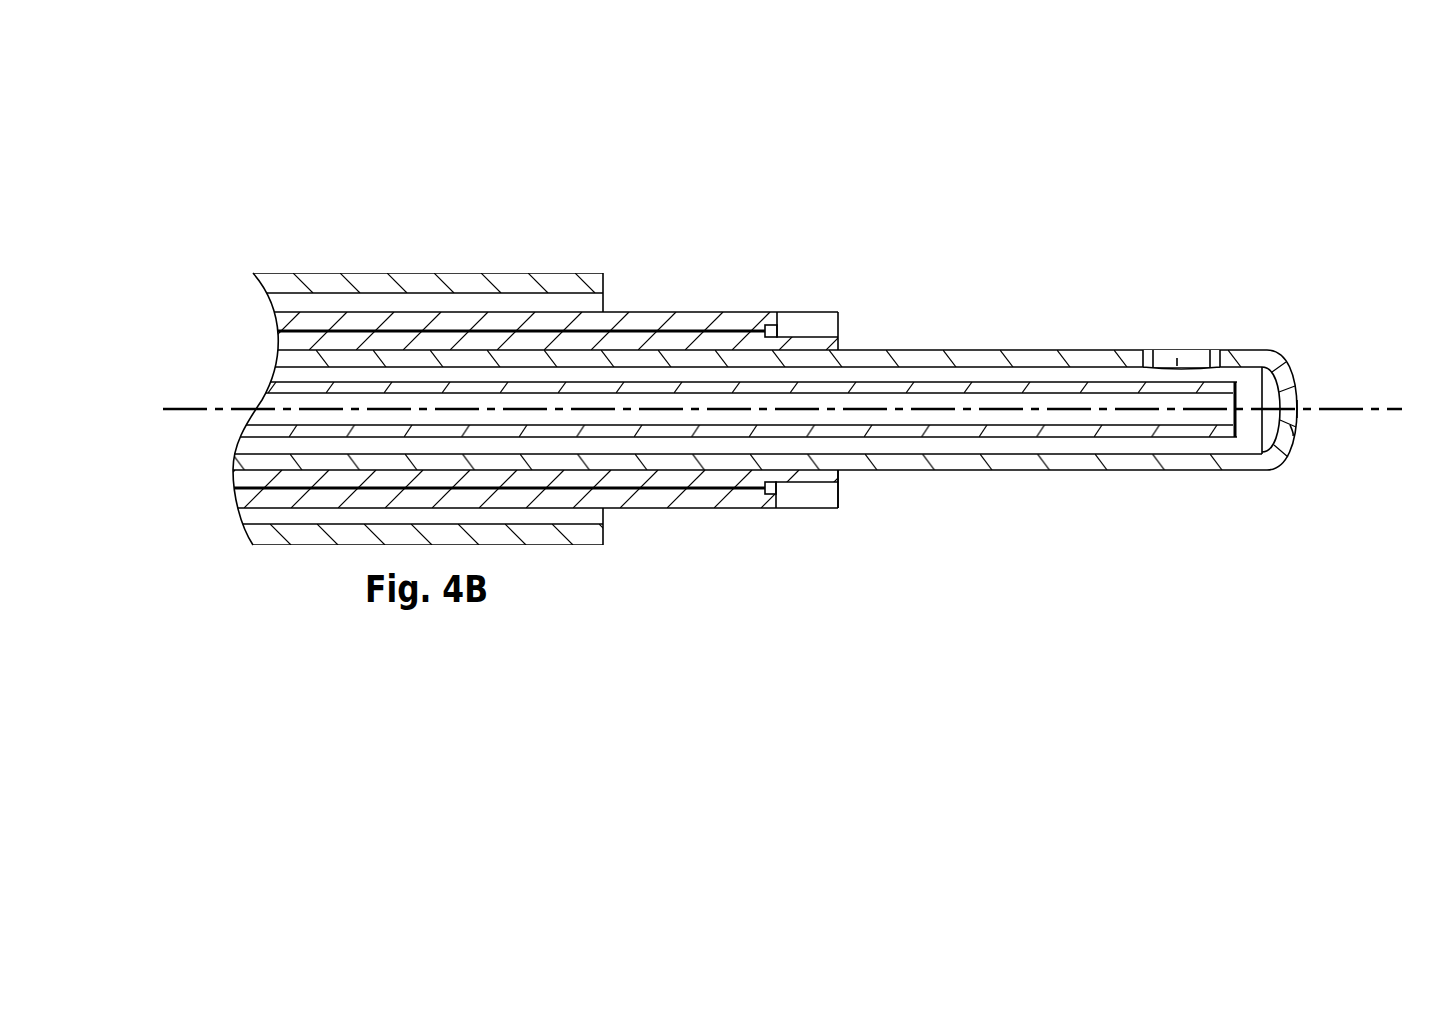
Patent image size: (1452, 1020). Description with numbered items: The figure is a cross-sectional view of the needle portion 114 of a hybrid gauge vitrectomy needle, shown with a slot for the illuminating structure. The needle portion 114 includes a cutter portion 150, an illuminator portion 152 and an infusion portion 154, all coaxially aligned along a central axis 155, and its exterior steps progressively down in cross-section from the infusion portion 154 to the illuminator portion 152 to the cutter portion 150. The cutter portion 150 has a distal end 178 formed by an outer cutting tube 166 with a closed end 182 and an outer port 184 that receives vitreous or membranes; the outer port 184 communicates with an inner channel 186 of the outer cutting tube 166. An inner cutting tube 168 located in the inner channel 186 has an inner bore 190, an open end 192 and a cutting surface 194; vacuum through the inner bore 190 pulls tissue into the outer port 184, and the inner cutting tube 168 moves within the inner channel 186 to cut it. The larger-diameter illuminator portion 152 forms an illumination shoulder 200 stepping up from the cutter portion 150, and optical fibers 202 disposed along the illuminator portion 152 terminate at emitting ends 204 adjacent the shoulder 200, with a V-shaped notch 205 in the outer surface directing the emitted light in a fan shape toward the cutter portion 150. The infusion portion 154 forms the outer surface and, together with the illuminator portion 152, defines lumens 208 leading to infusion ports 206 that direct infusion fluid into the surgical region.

The needle portion 114 is at (330, 194).
The cutter portion 150 is at (1029, 342).
The illuminator portion 152 is at (703, 304).
The infusion portion 154 is at (415, 266).
The central axis 155 is at (1377, 412).
The outer cutting tube 166 is at (973, 460).
The inner cutting tube 168 is at (1123, 432).
The distal end 178 is at (1218, 193).
The closed end 182 is at (1297, 395).
The outer port 184 is at (1193, 357).
The inner channel 186 is at (1252, 438).
The inner bore 190 is at (268, 403).
The open end 192 is at (1293, 433).
The cutting surface 194 is at (1266, 366).
The illumination shoulder 200 is at (838, 475).
The optical fibers 202 is at (738, 330).
The emitting end 204 is at (778, 330).
The notch 205 is at (827, 322).
The infusion ports 206 is at (597, 302).
The lumens 208 is at (278, 303).